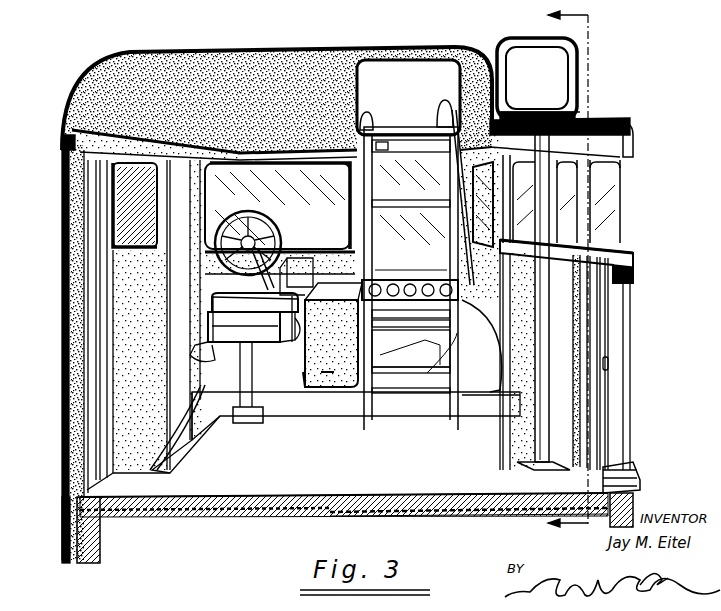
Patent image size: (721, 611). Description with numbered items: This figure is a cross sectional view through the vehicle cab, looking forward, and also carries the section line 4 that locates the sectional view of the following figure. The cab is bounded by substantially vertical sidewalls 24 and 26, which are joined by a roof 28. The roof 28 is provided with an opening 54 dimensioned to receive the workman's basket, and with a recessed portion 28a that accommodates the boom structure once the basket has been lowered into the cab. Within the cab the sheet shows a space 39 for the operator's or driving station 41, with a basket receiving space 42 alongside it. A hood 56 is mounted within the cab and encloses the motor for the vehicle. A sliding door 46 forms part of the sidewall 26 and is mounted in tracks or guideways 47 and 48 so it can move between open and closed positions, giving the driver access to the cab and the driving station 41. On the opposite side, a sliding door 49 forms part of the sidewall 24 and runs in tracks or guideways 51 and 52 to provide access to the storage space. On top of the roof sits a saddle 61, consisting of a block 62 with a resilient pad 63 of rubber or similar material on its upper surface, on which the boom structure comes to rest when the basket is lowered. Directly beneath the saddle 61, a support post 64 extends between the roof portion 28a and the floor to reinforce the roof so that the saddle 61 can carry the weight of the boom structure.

The roof 28 is at (312, 50).
The recessed portion 28a is at (600, 120).
The opening 54 is at (417, 80).
The track 47 is at (63, 137).
The sidewall 26 is at (62, 410).
The sliding door 46 is at (85, 232).
The driving station 41 is at (230, 327).
The hood 56 is at (350, 333).
The support post 64 is at (530, 428).
The sidewall 24 is at (640, 263).
The track 51 is at (630, 283).
The sliding door 49 is at (617, 397).
The track 52 is at (617, 490).
The space 39 is at (240, 482).
The basket receiving space 42 is at (437, 460).
The track 48 is at (80, 533).
The saddle 61 is at (547, 100).
The resilient pad 63 is at (540, 110).
The block 62 is at (560, 117).
The section line 4- 4 is at (553, 273).